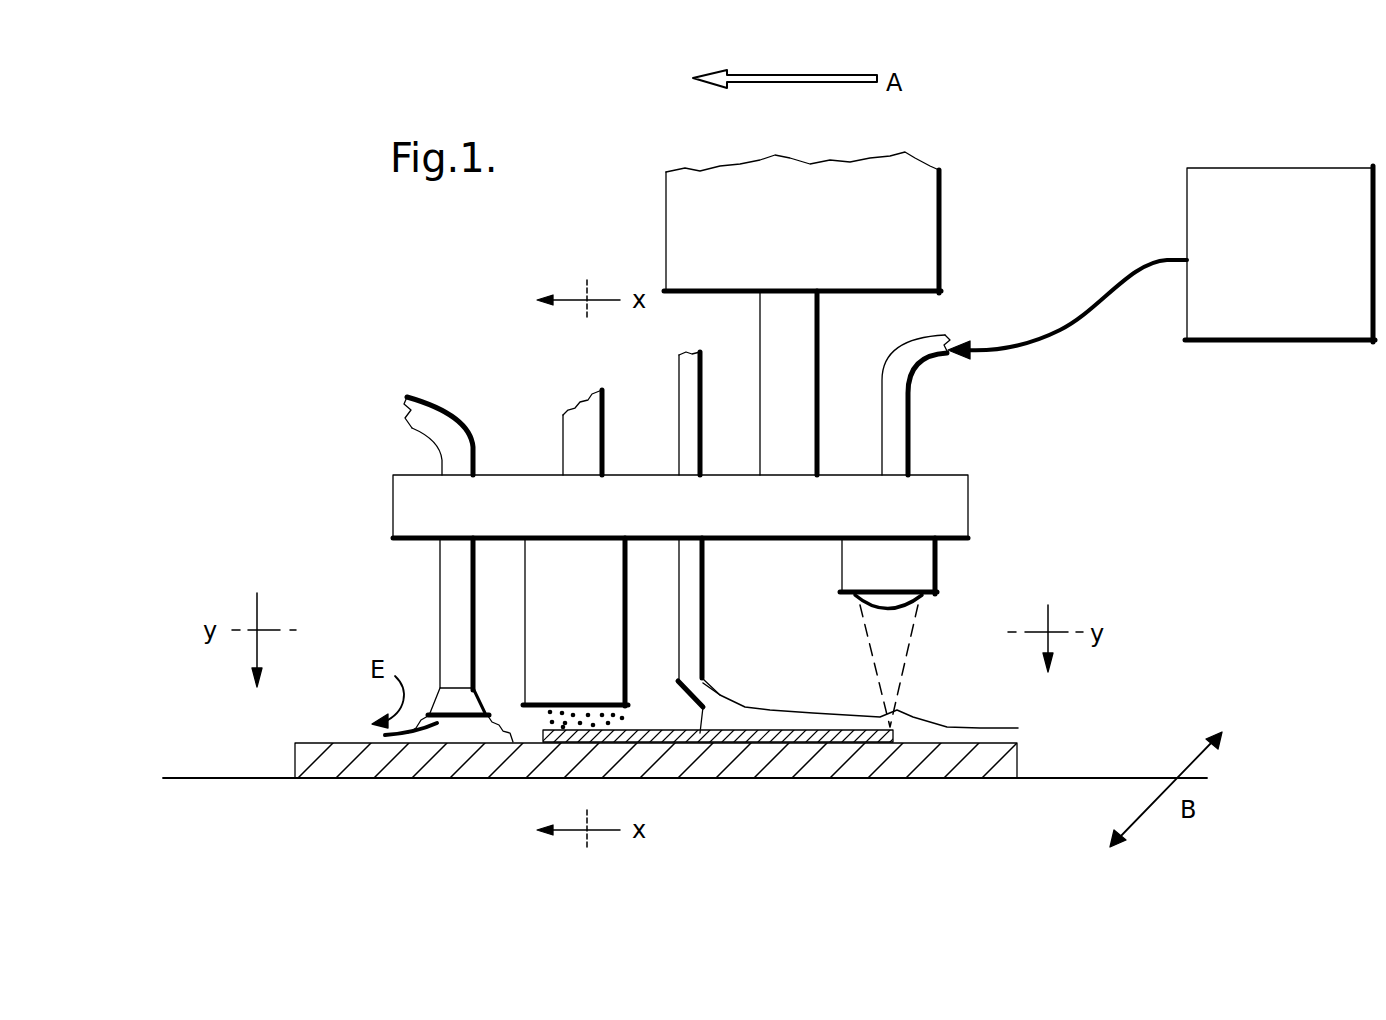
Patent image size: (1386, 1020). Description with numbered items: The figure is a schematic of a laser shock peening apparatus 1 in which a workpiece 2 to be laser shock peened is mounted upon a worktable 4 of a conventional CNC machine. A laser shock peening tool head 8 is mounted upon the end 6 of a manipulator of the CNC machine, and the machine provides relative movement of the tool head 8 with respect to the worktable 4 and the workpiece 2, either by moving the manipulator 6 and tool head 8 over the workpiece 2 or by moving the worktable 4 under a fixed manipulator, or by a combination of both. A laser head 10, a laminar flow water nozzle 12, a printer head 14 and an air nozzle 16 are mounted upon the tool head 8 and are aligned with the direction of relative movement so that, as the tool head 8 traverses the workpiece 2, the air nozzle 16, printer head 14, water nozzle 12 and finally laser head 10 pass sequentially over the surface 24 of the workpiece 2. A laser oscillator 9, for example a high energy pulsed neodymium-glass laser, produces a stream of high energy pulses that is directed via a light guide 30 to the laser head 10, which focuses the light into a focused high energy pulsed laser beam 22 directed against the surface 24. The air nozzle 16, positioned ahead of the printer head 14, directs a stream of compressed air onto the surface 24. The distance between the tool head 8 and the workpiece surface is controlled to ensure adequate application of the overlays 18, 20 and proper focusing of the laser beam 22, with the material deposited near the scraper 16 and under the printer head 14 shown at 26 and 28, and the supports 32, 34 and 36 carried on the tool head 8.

The apparatus for producing a three-dimensional object 1 is at (272, 430).
The workpiece 2 is at (323, 762).
The worktable 4 is at (183, 790).
The end of manipulator 6 is at (803, 242).
The laser shock peening tool head 8 is at (692, 531).
The laser oscillator 9 is at (1278, 282).
The laser head 10 is at (915, 563).
The laminar flow water nozzle 12 is at (705, 658).
The printer head 14 is at (586, 611).
The air nozzle 16 is at (450, 613).
The overlay 18 is at (677, 735).
The overlay 20 is at (813, 720).
The laser beam 22 is at (907, 662).
The surface of the workpiece 24 is at (332, 742).
The excess powder 26 is at (443, 725).
The applied powder 28 is at (563, 725).
The light guide 30 is at (885, 378).
The holder 32 is at (692, 373).
The holder 34 is at (577, 430).
The supply line 36 is at (447, 437).